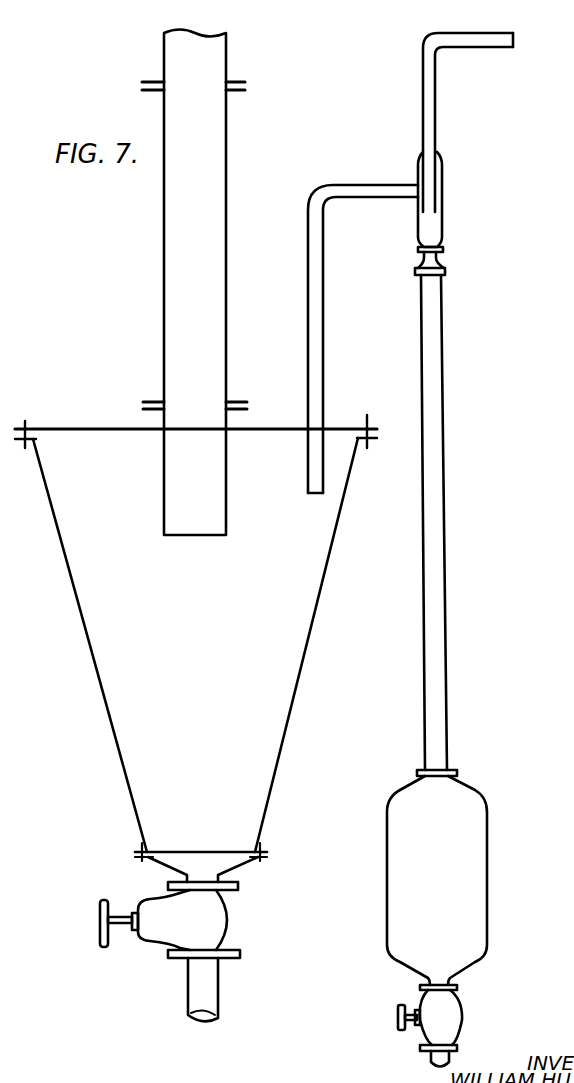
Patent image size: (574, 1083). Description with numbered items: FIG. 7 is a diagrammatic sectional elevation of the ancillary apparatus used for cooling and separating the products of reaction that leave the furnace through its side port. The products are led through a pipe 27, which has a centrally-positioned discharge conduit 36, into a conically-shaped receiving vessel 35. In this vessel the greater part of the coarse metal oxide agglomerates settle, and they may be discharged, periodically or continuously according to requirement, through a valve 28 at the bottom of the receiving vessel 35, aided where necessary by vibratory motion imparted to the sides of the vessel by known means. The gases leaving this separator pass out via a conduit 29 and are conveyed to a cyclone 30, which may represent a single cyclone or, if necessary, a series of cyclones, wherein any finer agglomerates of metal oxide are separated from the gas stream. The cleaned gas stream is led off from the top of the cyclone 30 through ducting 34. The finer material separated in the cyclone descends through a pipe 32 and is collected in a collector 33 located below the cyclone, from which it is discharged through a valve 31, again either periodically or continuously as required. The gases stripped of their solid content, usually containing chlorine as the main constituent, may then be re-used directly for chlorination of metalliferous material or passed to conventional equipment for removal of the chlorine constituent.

The pipe 27 is at (170, 62).
The valve 28 is at (223, 918).
The conduit 29 is at (308, 226).
The cyclone 30 is at (443, 208).
The valve 31 is at (453, 1010).
The pipe 32 is at (448, 598).
The collector 33 is at (472, 845).
The ducting 34 is at (482, 42).
The receiving vessel 35 is at (137, 637).
The discharge conduit 36 is at (190, 497).